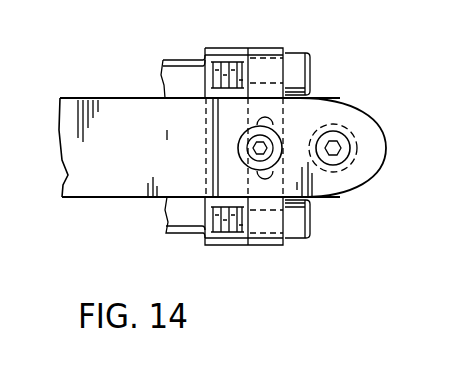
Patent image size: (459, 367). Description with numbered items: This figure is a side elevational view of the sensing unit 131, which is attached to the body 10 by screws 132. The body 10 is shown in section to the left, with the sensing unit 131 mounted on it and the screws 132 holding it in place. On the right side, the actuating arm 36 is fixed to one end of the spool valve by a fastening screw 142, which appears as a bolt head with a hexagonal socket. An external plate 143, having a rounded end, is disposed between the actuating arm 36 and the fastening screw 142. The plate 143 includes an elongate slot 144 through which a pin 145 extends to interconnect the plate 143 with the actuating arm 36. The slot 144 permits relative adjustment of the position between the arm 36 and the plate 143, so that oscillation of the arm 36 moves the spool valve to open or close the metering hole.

The body 10 is at (200, 235).
The actuating arm 36 is at (104, 187).
The sensing unit 131 is at (263, 48).
The screws 132 is at (293, 52).
The fastening screw 142 is at (350, 137).
The external plate 143 is at (350, 187).
The elongate slot 144 is at (270, 121).
The pin 145 is at (238, 143).